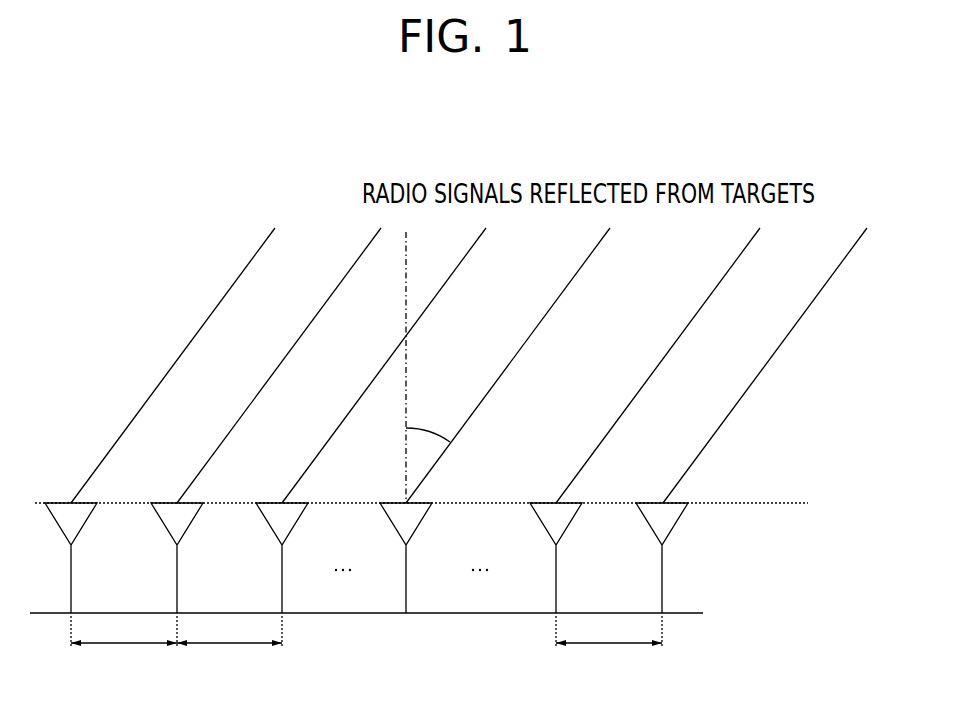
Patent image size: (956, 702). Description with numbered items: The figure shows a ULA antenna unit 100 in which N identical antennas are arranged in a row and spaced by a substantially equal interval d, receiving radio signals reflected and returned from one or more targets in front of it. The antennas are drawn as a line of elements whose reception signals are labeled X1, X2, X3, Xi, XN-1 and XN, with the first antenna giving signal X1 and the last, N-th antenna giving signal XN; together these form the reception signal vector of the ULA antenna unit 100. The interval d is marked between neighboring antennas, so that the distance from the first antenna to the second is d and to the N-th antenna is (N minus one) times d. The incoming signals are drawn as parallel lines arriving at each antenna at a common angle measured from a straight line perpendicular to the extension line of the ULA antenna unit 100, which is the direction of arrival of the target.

The ULA antenna unit 100 is at (448, 455).
The first antenna reception signal X1 is at (160, 455).
The second antenna reception signal X2 is at (266, 455).
The third antenna reception signal X3 is at (371, 455).
The i-th antenna reception signal Xi is at (495, 455).
The (N-1)-th antenna reception signal XN-1 is at (645, 455).
The N-th antenna reception signal XN is at (751, 455).
The antenna interval d is at (366, 632).